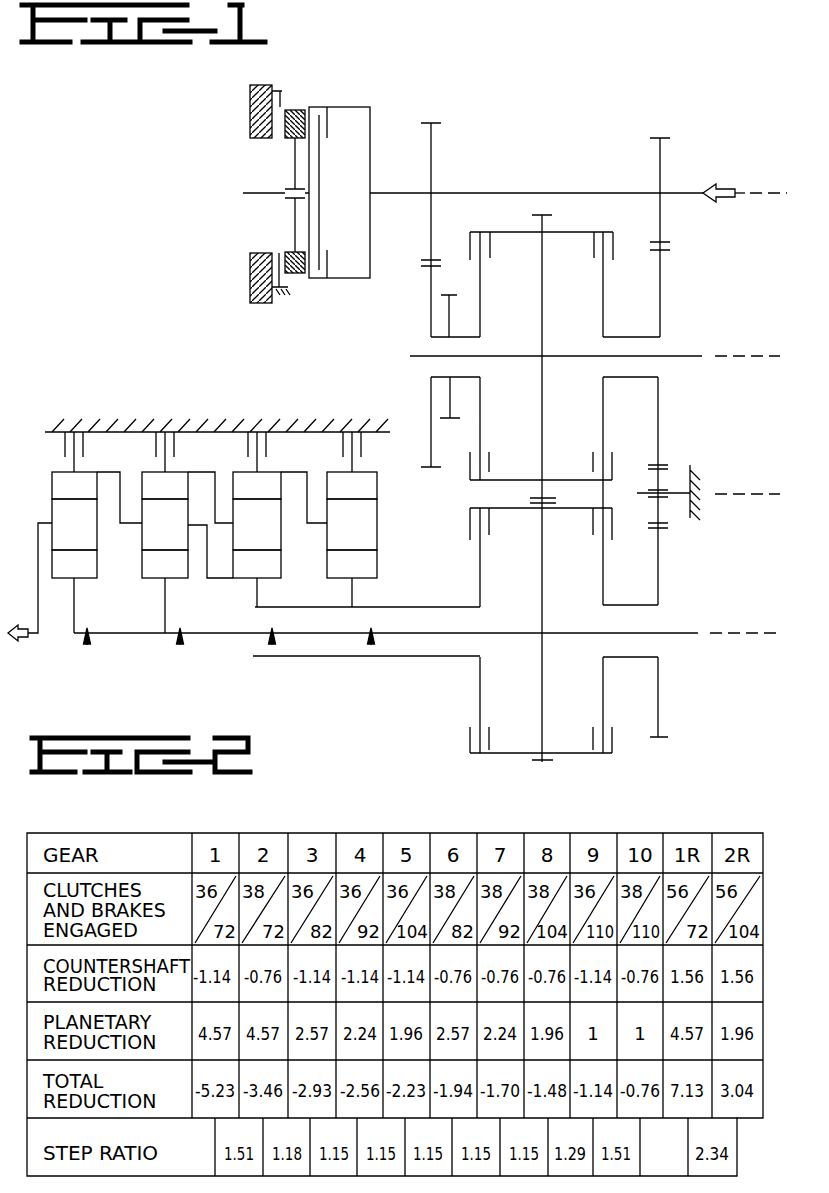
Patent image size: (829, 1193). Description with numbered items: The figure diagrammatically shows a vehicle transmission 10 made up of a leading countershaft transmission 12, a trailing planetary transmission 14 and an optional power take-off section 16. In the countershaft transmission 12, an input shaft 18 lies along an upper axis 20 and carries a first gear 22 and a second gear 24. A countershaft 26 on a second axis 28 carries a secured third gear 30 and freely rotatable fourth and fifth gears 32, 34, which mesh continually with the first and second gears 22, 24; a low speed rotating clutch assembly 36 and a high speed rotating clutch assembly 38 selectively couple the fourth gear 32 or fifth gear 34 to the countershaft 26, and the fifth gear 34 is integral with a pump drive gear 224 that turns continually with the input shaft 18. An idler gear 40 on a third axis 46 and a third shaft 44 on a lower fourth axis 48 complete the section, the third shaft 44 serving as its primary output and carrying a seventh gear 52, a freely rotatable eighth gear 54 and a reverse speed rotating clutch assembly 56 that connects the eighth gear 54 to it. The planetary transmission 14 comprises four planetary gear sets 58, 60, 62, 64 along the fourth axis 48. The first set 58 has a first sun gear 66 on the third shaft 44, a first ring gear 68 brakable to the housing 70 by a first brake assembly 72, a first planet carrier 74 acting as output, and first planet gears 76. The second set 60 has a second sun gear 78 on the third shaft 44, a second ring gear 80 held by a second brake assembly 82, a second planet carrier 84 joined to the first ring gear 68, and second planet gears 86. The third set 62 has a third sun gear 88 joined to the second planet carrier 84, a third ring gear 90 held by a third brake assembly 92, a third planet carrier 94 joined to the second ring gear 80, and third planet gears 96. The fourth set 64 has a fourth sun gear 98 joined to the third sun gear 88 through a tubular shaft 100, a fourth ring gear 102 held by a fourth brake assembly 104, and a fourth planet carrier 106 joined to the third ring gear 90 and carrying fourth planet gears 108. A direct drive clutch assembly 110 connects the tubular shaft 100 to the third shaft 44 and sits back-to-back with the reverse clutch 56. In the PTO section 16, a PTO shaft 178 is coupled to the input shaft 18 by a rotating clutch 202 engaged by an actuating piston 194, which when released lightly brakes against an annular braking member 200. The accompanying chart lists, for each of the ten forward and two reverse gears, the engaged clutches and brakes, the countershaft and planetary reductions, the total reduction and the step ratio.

The vehicle transmission 10 is at (601, 109).
The leading countershaft transmission 12 is at (420, 323).
The trailing planetary transmission 14 is at (175, 377).
The power take-off section 16 is at (324, 90).
The input shaft 18 is at (525, 193).
The upper axis 20 is at (745, 193).
The first gear 22 is at (670, 148).
The second gear 24 is at (433, 138).
The countershaft 26 is at (686, 357).
The second axis 28 is at (760, 358).
The third gear 30 is at (552, 222).
The fourth gear 32 is at (670, 264).
The fifth gear 34 is at (421, 264).
The low speed rotating clutch assembly 36 is at (592, 258).
The high speed rotating clutch assembly 38 is at (478, 224).
The idler gear 40 is at (661, 478).
The third shaft 44 is at (668, 631).
The third axis 46 is at (765, 496).
The fourth axis 48 is at (768, 635).
The seventh gear 52 is at (533, 762).
The eighth gear 54 is at (658, 717).
The reverse speed rotating clutch assembly 56 is at (607, 764).
The first planetary gear set 58 is at (86, 646).
The second planetary gear set 60 is at (179, 646).
The third planetary gear set 62 is at (270, 646).
The fourth planetary gear set 64 is at (369, 646).
The first sun gear 66 is at (74, 564).
The first ring gear 68 is at (74, 485).
The housing 70 is at (90, 428).
The first brake assembly 72 is at (92, 440).
The first planet carrier 74 is at (45, 523).
The first planet gears 76 is at (74, 524).
The second sun gear 78 is at (165, 564).
The second ring gear 80 is at (165, 485).
The second brake assembly 82 is at (185, 440).
The second planet carrier 84 is at (135, 525).
The second planet gears 86 is at (165, 524).
The third sun gear 88 is at (257, 564).
The third ring gear 90 is at (257, 485).
The third brake assembly 92 is at (275, 440).
The third planet carrier 94 is at (215, 470).
The third planet gears 96 is at (257, 524).
The fourth sun gear 98 is at (352, 564).
The intermediate tubular shaft 100 is at (447, 607).
The fourth ring gear 102 is at (352, 485).
The fourth brake assembly 104 is at (373, 440).
The fourth planet carrier 106 is at (318, 523).
The fourth planet gears 108 is at (352, 524).
The direct drive clutch assembly 110 is at (462, 735).
The PTO shaft 178 is at (258, 193).
The actuating piston 194 is at (287, 245).
The annular braking member 200 is at (282, 100).
The rotating clutch 202 is at (322, 292).
The pump drive gear 224 is at (452, 400).